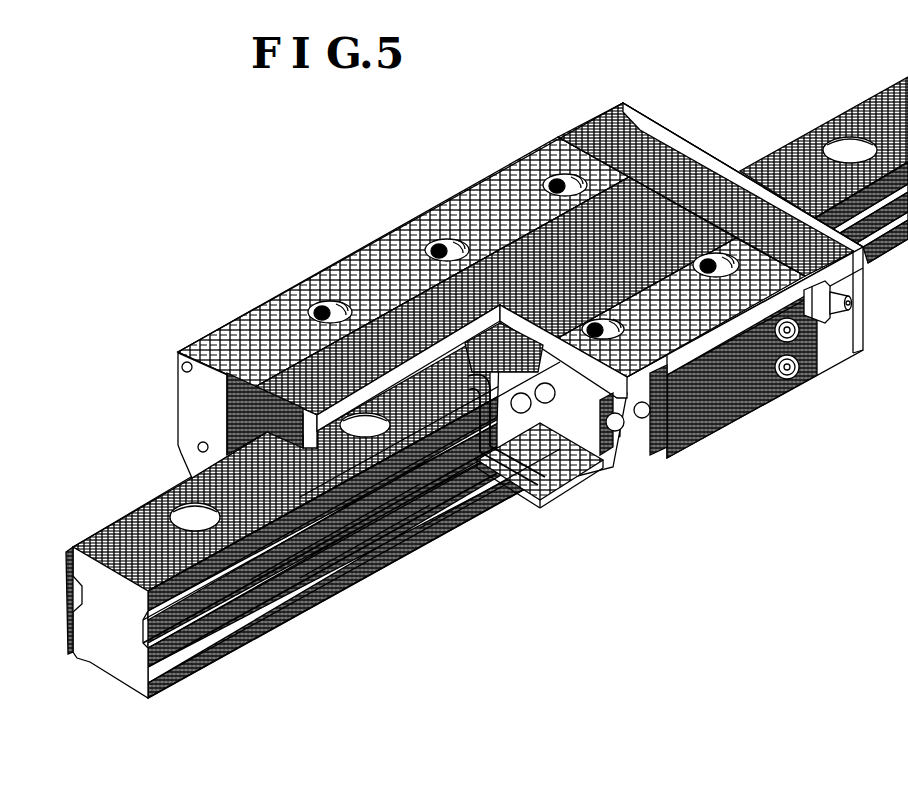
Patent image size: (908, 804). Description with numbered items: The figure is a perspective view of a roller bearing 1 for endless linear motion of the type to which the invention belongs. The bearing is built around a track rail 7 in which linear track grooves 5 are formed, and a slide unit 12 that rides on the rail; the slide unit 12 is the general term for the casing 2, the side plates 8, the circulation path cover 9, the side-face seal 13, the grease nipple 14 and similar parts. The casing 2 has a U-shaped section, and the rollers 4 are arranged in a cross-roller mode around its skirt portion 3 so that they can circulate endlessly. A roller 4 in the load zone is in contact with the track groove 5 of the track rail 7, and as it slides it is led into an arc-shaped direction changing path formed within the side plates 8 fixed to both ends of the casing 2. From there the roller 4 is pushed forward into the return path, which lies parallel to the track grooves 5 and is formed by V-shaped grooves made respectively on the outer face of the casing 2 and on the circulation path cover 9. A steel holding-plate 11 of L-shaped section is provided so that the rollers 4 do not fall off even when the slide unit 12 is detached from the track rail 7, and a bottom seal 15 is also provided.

The roller bearing 1 is at (365, 197).
The casing 2 is at (700, 357).
The skirt portion 3 is at (643, 433).
The rollers 4 is at (557, 393).
The linear track grooves 5 is at (383, 457).
The track rail 7 is at (130, 537).
The side plates 8 is at (343, 457).
The circulation path cover 9 is at (740, 367).
The steel holding-plate 11 is at (527, 453).
The slide unit 12 is at (700, 135).
The side-face seal 13 is at (283, 450).
The grease nipple 14 is at (823, 325).
The bottom seal 15 is at (495, 483).